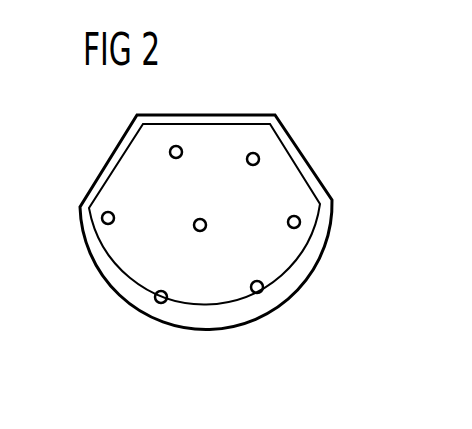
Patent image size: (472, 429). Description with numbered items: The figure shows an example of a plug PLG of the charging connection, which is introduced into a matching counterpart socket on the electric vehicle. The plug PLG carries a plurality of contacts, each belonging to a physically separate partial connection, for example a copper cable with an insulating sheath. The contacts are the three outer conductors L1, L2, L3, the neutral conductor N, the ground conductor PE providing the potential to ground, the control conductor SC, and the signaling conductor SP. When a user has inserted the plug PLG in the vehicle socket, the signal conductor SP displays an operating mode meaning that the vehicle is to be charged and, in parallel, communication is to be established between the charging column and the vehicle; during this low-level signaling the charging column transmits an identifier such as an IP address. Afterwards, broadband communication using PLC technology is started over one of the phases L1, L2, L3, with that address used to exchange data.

The plug PLG is at (203, 337).
The outer conductor L3 is at (112, 212).
The control conductor SC is at (178, 159).
The ground conductor PE is at (203, 218).
The signaling conductor SP is at (255, 166).
The neutral conductor N is at (287, 226).
The outer conductor L2 is at (158, 289).
The outer conductor L1 is at (250, 287).